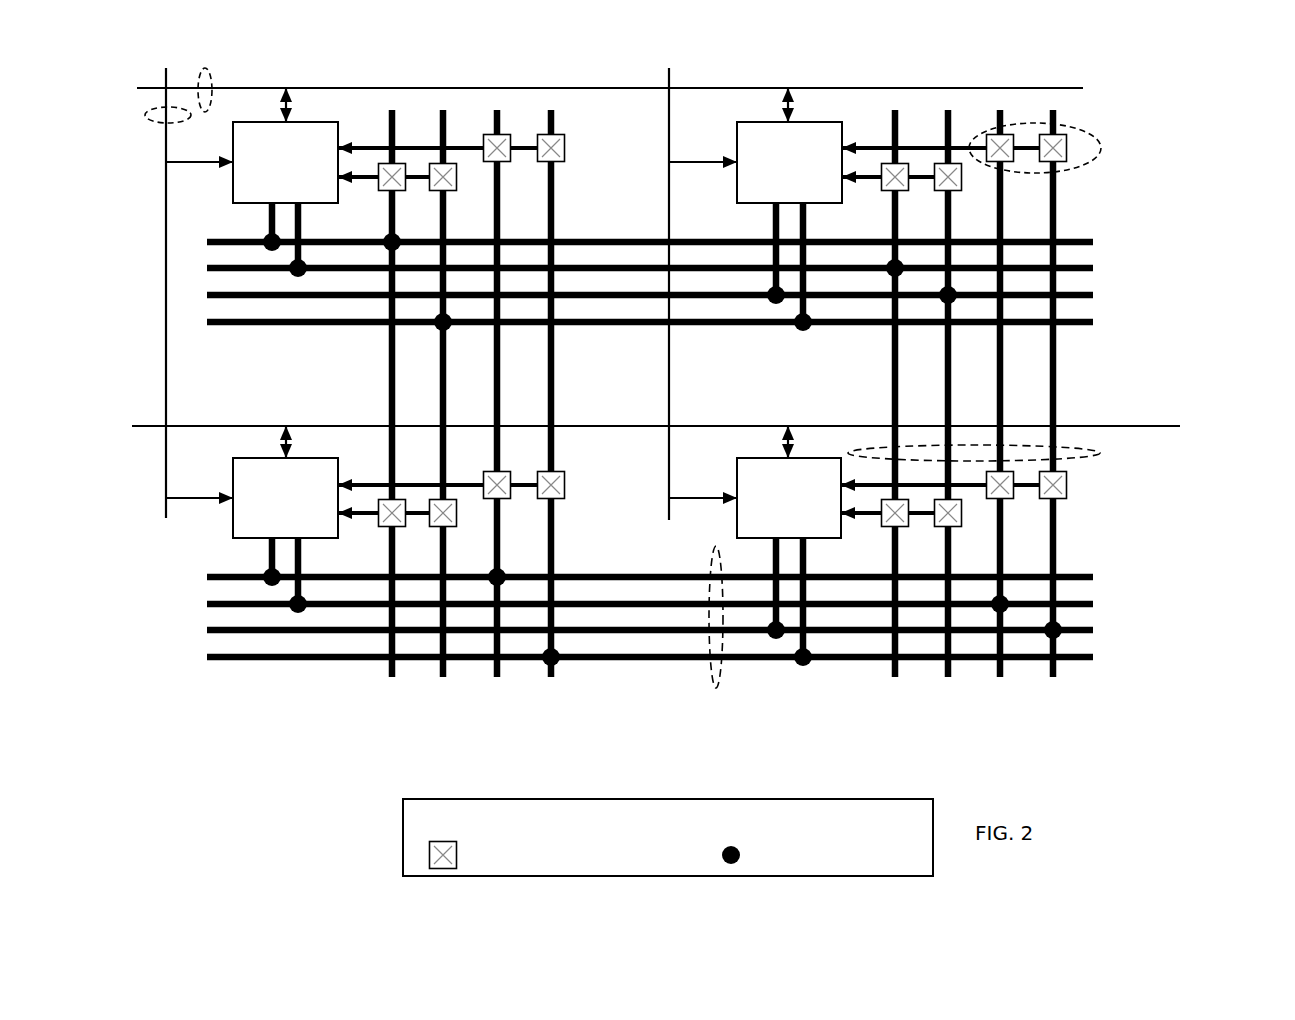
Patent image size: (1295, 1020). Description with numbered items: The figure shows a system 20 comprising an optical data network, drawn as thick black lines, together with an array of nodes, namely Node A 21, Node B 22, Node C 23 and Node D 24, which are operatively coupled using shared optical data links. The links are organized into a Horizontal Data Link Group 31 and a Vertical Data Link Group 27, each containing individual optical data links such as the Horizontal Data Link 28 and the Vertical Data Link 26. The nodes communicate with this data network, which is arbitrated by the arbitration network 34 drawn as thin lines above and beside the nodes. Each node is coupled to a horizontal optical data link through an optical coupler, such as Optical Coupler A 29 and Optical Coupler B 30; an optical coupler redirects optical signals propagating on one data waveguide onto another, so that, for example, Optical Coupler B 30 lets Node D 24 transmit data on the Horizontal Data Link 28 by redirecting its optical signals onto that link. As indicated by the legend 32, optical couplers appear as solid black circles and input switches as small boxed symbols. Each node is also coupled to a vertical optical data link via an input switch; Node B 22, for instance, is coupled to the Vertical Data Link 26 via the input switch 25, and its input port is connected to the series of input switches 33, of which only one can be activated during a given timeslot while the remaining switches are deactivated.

The system 20 is at (662, 459).
The Node A 21 is at (392, 195).
The Node B 22 is at (895, 222).
The Node C 23 is at (392, 531).
The Node D 24 is at (895, 557).
The input switch 25 is at (1068, 153).
The Vertical Data Link 26 is at (1053, 367).
The Vertical Data Link Group 27 is at (1102, 453).
The Horizontal Data Link 28 is at (268, 635).
The Optical Coupler A 29 is at (1057, 633).
The Optical Coupler B 30 is at (780, 636).
The Horizontal Data Link Group 31 is at (717, 692).
The legend 32 is at (668, 837).
The series of input switches 33 is at (1083, 132).
The arbitration network 34 is at (148, 141).